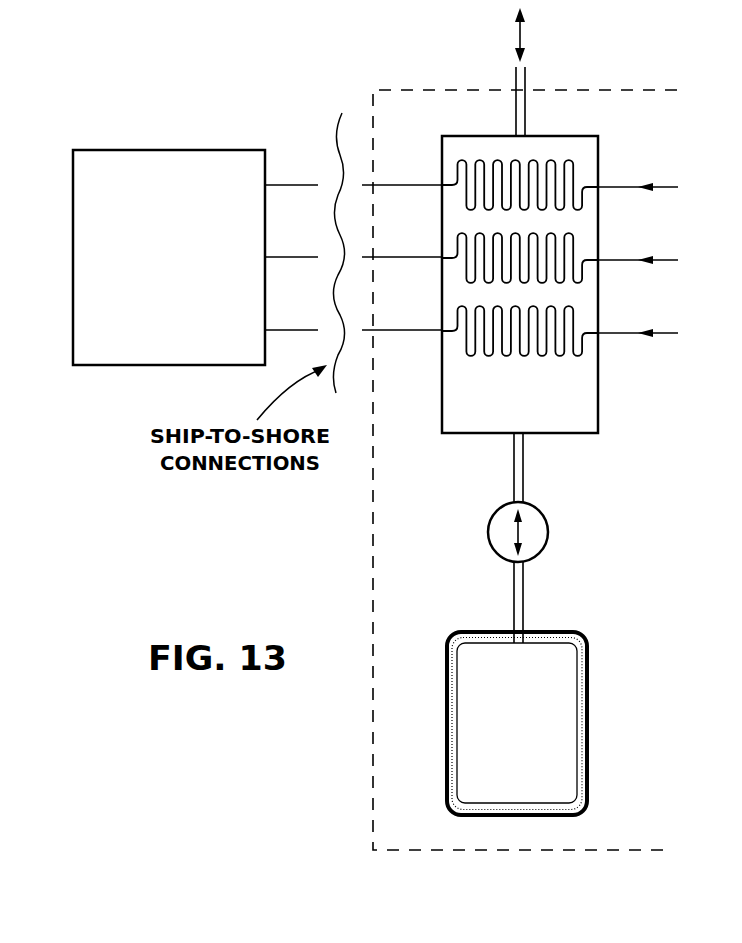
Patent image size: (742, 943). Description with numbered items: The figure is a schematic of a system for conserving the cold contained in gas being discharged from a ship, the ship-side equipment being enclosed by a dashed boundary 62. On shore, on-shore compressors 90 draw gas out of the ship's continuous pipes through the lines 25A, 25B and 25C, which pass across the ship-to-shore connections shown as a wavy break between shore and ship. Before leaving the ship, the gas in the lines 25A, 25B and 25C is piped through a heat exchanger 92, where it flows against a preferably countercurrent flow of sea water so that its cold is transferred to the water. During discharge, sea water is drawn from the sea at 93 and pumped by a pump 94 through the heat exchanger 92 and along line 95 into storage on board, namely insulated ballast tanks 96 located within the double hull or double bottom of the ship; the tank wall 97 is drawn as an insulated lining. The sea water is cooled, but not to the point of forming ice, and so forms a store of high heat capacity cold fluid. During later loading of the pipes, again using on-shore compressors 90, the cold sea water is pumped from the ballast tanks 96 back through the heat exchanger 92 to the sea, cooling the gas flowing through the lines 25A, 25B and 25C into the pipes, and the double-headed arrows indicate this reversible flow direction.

The line 25A is at (413, 183).
The line 25B is at (667, 258).
The line 25C is at (667, 331).
The ship 62 is at (495, 851).
The on-shore compressors 90 is at (148, 150).
The heat exchanger 92 is at (563, 136).
The sea water intake 93 is at (526, 80).
The pump 94 is at (548, 538).
The line 95 is at (523, 483).
The insulated ballast tanks 96 is at (588, 685).
The tank insulation 97 is at (588, 737).